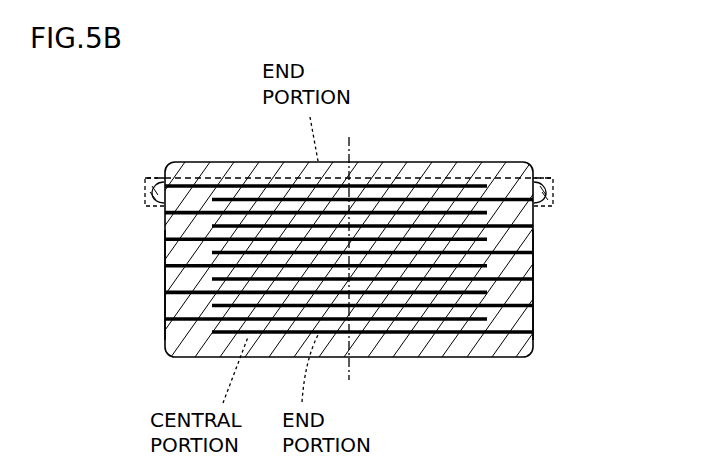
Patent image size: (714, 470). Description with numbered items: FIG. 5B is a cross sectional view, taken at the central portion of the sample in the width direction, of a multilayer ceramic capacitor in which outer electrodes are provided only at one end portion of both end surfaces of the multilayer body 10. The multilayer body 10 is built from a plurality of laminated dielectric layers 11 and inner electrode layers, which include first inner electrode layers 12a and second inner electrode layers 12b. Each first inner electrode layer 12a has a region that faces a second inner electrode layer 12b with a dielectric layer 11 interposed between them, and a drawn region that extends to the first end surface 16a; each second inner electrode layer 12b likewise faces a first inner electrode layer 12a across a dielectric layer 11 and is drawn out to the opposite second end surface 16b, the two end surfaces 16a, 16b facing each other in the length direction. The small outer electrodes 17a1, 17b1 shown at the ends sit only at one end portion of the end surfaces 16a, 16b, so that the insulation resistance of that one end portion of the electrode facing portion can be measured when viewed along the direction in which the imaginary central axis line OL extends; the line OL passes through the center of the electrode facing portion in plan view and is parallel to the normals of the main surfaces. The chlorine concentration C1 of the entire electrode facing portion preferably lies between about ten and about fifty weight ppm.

The multilayer body 10 is at (378, 161).
The dielectric layer 11 is at (250, 163).
The first inner electrode layer 12a is at (397, 185).
The second inner electrode layer 12b is at (438, 198).
The first end surface 16a is at (165, 290).
The second end surface 16b is at (533, 290).
The first external electrode 17a1 is at (144, 190).
The second external electrode 17b1 is at (554, 190).
The central axis line OL is at (348, 247).
The Cl concentration C1 is at (503, 177).